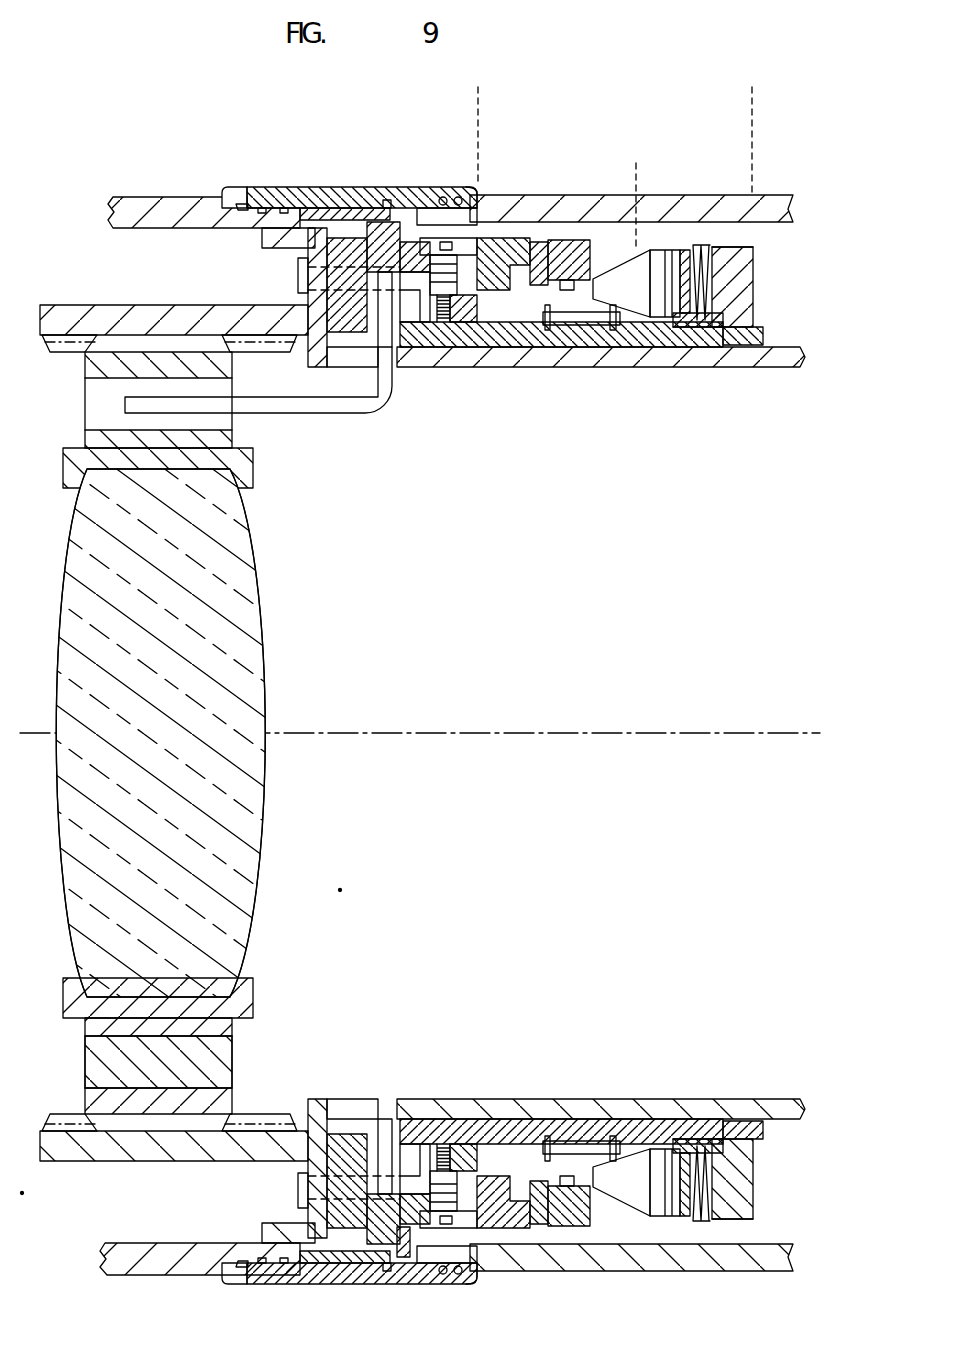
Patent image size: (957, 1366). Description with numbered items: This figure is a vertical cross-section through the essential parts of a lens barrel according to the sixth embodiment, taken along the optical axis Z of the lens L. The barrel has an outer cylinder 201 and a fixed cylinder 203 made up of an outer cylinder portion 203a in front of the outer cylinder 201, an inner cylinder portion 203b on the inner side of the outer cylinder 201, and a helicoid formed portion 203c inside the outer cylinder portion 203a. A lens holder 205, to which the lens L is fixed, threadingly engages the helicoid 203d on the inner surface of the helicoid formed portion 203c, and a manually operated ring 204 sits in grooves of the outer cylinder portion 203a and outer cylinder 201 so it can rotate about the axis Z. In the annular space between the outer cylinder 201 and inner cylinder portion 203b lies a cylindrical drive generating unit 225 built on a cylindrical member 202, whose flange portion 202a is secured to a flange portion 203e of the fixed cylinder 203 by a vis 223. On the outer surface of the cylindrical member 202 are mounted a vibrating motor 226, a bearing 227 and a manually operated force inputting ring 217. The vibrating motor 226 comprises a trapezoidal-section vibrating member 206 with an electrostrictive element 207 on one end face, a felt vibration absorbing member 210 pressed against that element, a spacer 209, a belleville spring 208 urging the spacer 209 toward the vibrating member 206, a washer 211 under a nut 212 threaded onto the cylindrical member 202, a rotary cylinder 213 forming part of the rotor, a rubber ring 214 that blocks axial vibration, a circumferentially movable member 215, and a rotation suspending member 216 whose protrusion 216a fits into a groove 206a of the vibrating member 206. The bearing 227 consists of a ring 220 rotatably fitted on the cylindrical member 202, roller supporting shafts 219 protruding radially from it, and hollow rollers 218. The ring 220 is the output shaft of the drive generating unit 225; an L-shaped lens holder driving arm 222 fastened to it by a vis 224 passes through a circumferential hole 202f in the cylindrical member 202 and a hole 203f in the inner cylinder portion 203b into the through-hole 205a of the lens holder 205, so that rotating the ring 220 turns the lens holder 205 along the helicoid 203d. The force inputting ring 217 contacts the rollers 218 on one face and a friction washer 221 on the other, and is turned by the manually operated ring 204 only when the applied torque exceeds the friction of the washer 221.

The outer cylinder 201 is at (790, 200).
The cylindrical member 202 is at (500, 347).
The flange portion 202a is at (342, 350).
The hole 202f is at (412, 300).
The fixed cylinder 203 is at (114, 192).
The outer cylinder portion 203a is at (167, 198).
The inner cylinder portion 203b is at (765, 367).
The helicoid formed portion 203c is at (92, 305).
The helicoid 203d is at (67, 353).
The flange portion 203e is at (300, 228).
The hole 203f is at (370, 367).
The manually operated ring 204 is at (232, 190).
The lens holder 205 is at (250, 492).
The through-hole 205a is at (92, 410).
The vibrating member 206 is at (655, 250).
The groove 206a is at (630, 224).
The electrostrictive element 207 is at (688, 250).
The belleville spring 208 is at (705, 250).
The spacer 209 is at (695, 327).
The vibration absorbing member 210 is at (740, 345).
The washer 211 is at (738, 248).
The nut 212 is at (735, 282).
The rotary cylinder 213 is at (488, 240).
The rubber ring 214 is at (535, 243).
The circumferentially movable member 215 is at (570, 242).
The vibration member rotation suspending member 216 is at (580, 327).
The protrusion 216a is at (613, 330).
The manually operated force inputting ring 217 is at (375, 200).
The hollow rollers 218 is at (470, 200).
The roller supporting shafts 219 is at (450, 322).
The ring 220 is at (445, 324).
The friction washer 221 is at (340, 208).
The lens holder driving arm 222 is at (275, 405).
The vis 223 is at (298, 275).
The vis 224 is at (368, 375).
The drive generating unit 225 is at (862, 331).
The vibrating motor 226 is at (752, 87).
The bearing 227 is at (494, 300).
The lens L is at (248, 690).
The central axis Z is at (722, 718).